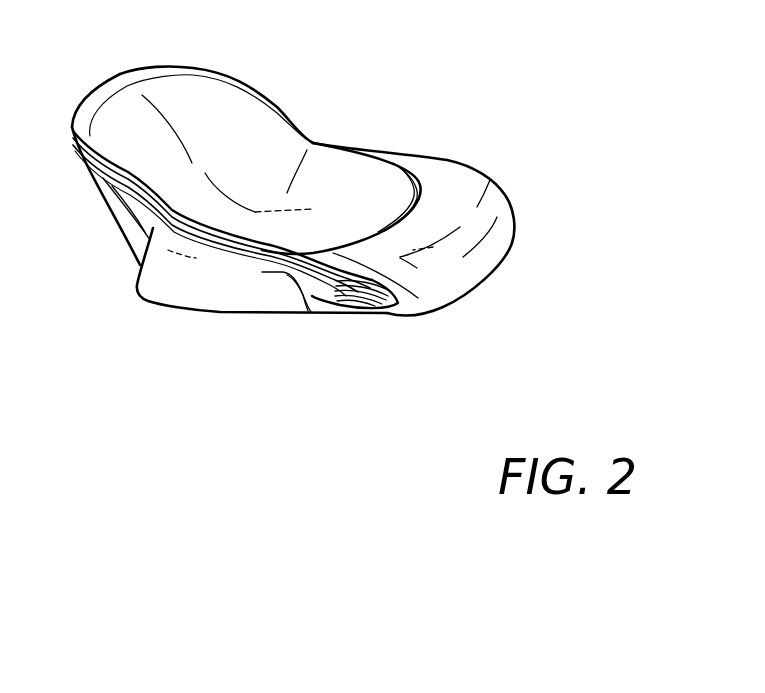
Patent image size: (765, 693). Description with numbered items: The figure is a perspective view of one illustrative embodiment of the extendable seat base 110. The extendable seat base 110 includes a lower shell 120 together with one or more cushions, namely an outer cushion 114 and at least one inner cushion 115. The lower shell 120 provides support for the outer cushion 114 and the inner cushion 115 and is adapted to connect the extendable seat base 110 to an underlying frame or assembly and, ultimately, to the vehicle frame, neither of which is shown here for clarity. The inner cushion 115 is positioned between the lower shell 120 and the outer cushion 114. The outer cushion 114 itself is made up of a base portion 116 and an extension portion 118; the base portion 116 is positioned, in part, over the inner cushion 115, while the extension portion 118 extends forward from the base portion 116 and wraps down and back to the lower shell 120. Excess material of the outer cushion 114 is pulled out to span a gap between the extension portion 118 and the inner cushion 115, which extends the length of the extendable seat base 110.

The extendable seat base 110 is at (354, 205).
The outer cushion 114 is at (384, 176).
The inner cushion 115 is at (341, 286).
The base portion 116 is at (246, 219).
The extension portion 118 is at (488, 224).
The lower shell 120 is at (265, 293).